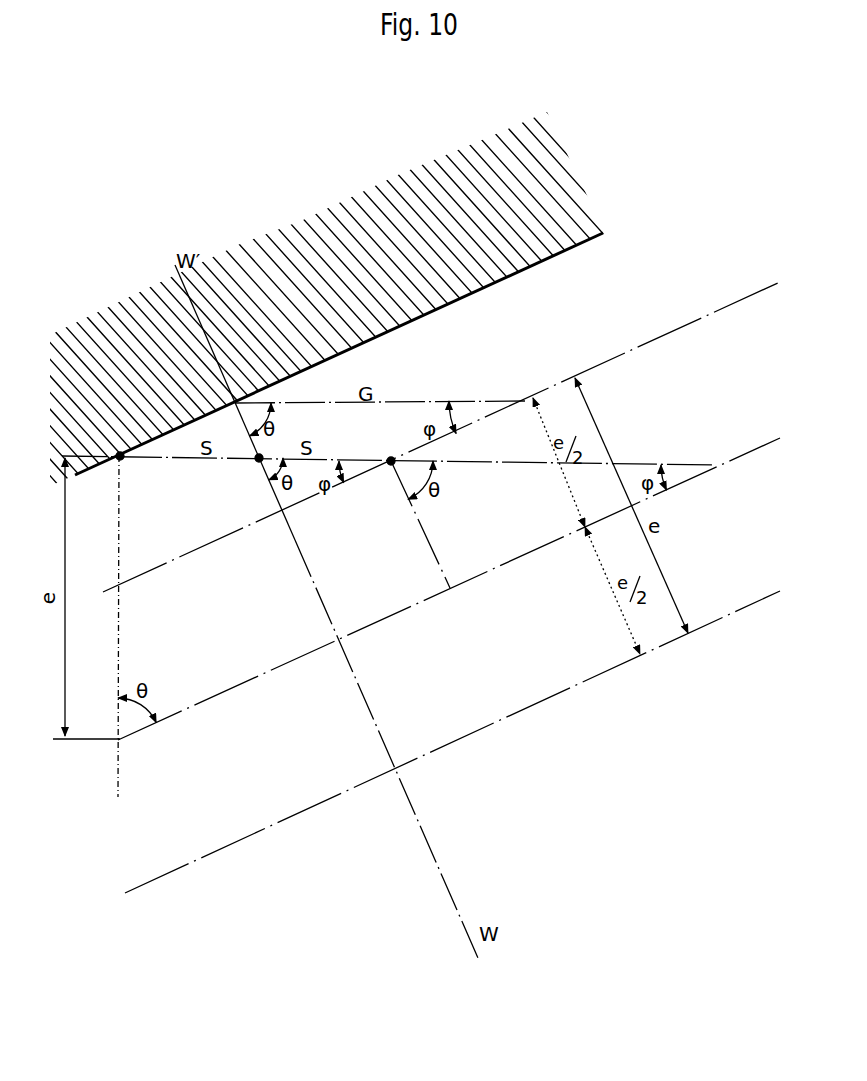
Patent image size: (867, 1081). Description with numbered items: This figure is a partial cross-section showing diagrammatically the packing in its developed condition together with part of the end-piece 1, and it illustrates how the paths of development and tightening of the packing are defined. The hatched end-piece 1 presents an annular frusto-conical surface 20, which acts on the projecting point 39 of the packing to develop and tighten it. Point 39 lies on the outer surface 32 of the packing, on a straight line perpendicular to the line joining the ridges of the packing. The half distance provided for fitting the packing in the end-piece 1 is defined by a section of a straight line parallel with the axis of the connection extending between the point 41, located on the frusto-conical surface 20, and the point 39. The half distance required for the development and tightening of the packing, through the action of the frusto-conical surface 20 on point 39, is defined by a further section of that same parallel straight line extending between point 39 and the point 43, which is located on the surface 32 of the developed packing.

The end-piece 1 is at (273, 259).
The frusto-conical surface 20 is at (485, 322).
The outer surface of the packing 32 is at (609, 359).
The point 41 is at (114, 453).
The point 39 is at (255, 464).
The point 43 is at (389, 468).